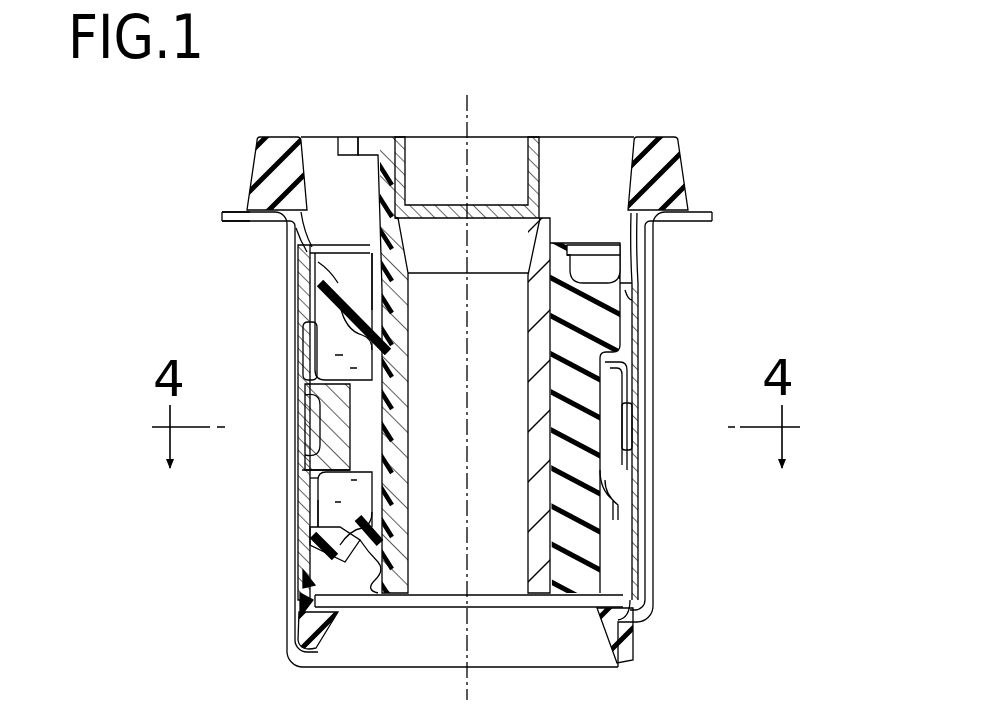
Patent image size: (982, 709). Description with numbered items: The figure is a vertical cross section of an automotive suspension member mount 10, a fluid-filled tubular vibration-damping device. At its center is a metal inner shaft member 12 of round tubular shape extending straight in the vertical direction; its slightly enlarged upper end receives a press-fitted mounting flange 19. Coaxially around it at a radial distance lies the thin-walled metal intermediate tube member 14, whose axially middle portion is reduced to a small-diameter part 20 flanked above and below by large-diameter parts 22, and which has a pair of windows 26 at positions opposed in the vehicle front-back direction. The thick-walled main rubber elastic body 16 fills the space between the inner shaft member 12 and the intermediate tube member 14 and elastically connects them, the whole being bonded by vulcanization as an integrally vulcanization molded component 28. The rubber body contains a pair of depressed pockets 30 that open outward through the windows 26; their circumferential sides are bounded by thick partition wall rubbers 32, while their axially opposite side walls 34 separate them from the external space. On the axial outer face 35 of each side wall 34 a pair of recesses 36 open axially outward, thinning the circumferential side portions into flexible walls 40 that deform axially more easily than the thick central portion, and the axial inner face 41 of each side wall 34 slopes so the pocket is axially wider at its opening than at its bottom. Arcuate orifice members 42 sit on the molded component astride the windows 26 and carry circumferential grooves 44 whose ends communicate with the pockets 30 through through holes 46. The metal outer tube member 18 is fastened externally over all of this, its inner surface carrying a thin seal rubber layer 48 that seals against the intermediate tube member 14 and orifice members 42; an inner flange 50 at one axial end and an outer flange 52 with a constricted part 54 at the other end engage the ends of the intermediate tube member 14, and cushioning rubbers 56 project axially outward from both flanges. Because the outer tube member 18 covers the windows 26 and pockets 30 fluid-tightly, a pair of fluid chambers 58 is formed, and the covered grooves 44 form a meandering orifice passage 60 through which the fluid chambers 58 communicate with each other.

The suspension member mount 10 is at (728, 106).
The inner shaft member 12 is at (541, 389).
The intermediate tube member 14 is at (657, 304).
The main rubber elastic body 16 is at (634, 540).
The outer tube member 18 is at (283, 359).
The mounting flange 19 is at (567, 148).
The small-diameter part 20 is at (604, 418).
The large-diameter part 22 is at (641, 284).
The window 26 is at (304, 320).
The integrally vulcanization molded component 28 is at (582, 216).
The pocket 30 is at (331, 543).
The partition wall rubber 32 is at (583, 442).
The side wall 34 is at (319, 270).
The axial outer face 35 is at (386, 282).
The recess 36 is at (325, 262).
The flexible wall 40 is at (346, 322).
The axial inner face 41 is at (381, 340).
The orifice member 42 is at (298, 464).
The groove 44 is at (313, 413).
The through hole 46 is at (326, 478).
The seal rubber layer 48 is at (638, 372).
The inner flange 50 is at (619, 622).
The outer flange 52 is at (232, 211).
The constricted part 54 is at (306, 218).
The cushioning rubber 56 is at (277, 143).
The fluid chamber 58 is at (321, 500).
The orifice passage 60 is at (641, 432).